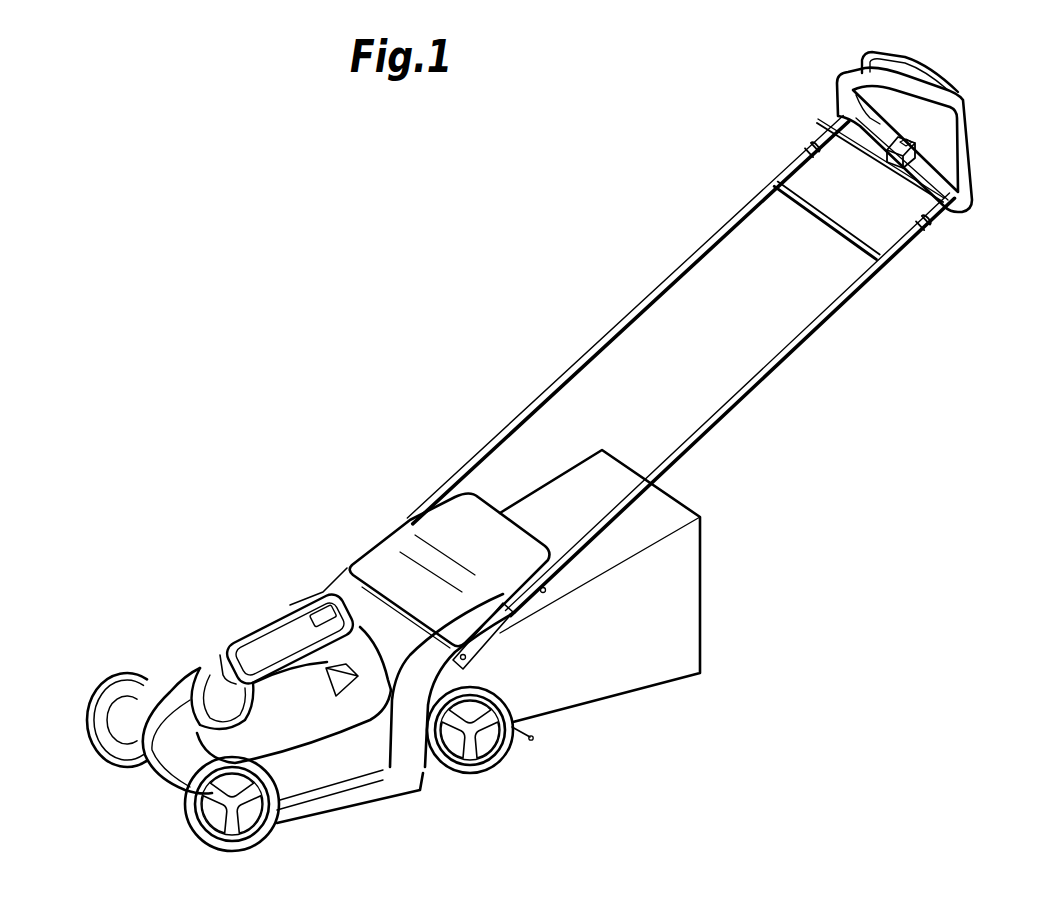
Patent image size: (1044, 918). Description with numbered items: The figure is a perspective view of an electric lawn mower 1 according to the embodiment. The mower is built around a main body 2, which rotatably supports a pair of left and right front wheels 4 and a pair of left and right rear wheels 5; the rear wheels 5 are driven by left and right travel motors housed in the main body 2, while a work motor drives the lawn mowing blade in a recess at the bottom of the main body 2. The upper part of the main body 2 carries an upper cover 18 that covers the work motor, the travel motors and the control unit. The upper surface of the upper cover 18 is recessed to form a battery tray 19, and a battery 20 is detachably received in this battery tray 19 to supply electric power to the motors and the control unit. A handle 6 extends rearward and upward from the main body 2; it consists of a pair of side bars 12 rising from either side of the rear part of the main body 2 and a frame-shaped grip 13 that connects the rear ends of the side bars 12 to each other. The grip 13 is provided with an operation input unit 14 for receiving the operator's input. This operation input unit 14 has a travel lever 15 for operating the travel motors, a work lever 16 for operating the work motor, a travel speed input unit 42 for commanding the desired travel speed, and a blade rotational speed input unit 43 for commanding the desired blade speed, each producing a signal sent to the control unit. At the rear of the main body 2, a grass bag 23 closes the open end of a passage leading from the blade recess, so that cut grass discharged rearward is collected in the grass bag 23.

The electric lawn mower 1 is at (348, 450).
The main body 2 is at (167, 767).
The front wheels 4 is at (113, 687).
The rear wheels 5 is at (480, 775).
The handle 6 is at (899, 282).
The side bars 12 is at (610, 337).
The grip 13 is at (850, 70).
The operation input unit 14 is at (911, 106).
The travel lever 15 is at (875, 58).
The work lever 16 is at (972, 117).
The upper cover 18 is at (293, 717).
The battery tray 19 is at (217, 690).
The battery 20 is at (277, 637).
The grass bag 23 is at (682, 605).
The travel speed input unit 42 is at (920, 153).
The blade rotational speed input unit 43 is at (885, 147).